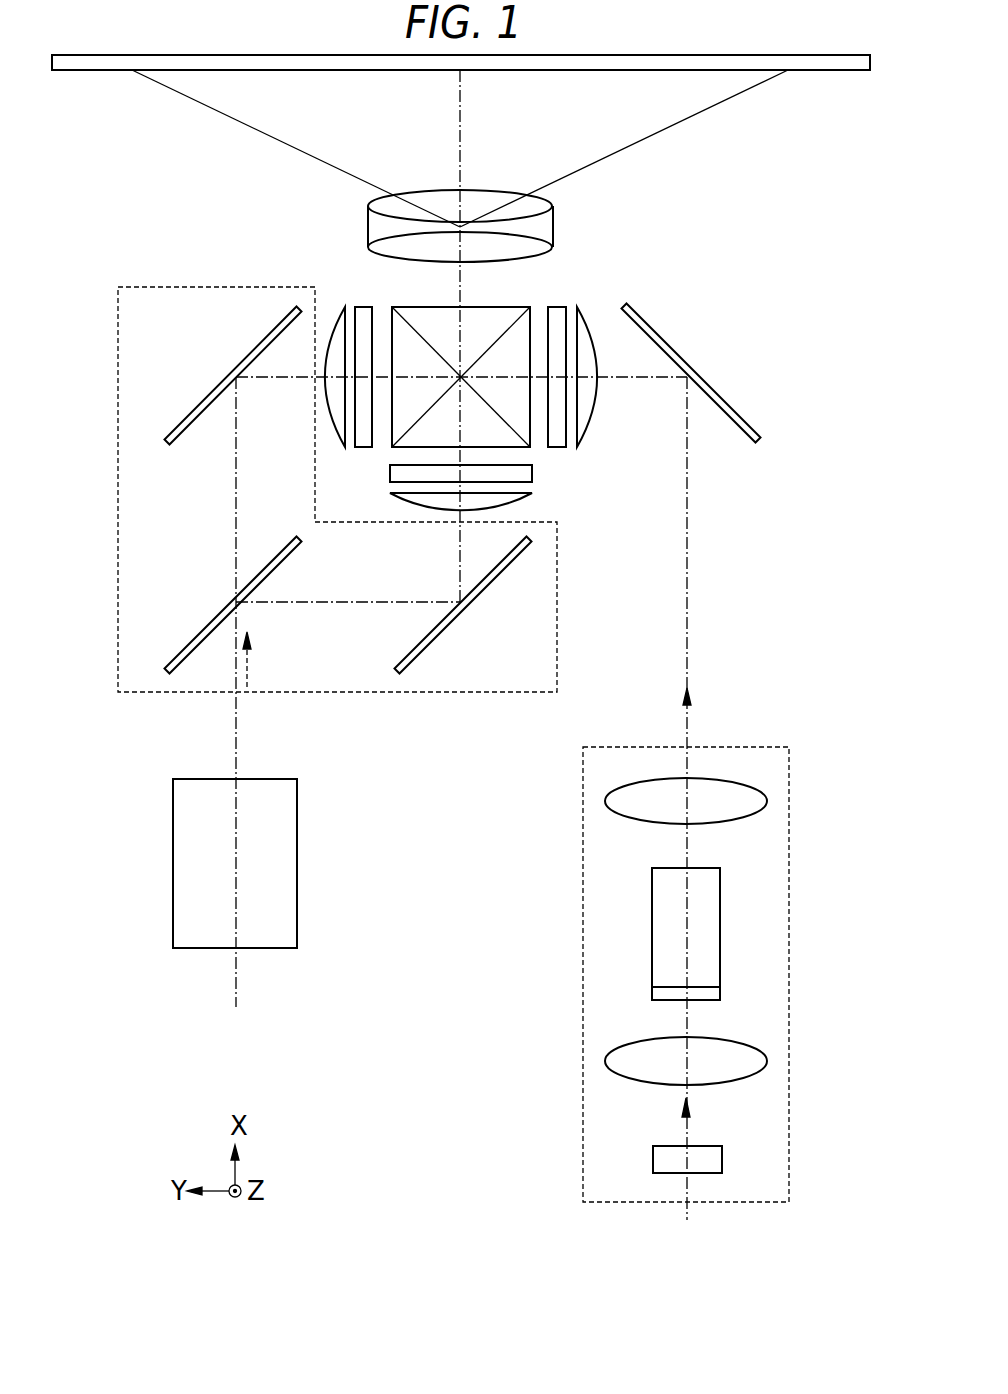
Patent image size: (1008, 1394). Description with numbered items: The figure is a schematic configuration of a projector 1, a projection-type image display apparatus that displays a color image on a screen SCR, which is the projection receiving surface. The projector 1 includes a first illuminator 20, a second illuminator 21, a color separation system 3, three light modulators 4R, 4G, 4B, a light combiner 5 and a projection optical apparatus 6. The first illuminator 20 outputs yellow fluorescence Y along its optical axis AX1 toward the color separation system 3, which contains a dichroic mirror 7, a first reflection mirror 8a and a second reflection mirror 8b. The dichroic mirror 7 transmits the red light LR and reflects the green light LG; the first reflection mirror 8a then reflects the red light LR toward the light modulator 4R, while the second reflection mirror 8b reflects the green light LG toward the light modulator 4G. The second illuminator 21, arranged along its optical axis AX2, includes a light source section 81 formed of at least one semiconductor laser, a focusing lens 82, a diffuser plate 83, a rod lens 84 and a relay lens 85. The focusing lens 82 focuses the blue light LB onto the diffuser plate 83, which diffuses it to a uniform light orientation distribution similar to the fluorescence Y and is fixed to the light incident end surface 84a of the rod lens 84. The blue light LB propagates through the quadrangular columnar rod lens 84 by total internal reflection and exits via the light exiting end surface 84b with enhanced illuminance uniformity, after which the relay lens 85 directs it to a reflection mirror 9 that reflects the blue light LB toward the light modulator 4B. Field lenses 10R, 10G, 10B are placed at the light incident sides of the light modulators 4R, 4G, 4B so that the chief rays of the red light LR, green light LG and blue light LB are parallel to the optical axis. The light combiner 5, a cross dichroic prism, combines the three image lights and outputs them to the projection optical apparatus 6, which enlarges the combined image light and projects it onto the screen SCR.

The projector 1 is at (806, 262).
The screen SCR is at (835, 72).
The projection optical apparatus 6 is at (440, 202).
The light combiner 5 is at (483, 317).
The light modulator 4R is at (363, 305).
The light modulator 4G is at (397, 475).
The light modulator 4B is at (556, 305).
The field lens 10R is at (342, 305).
The field lens 10G is at (395, 500).
The field lens 10B is at (582, 305).
The color separation system 3 is at (118, 432).
The first reflection mirror 8a is at (207, 390).
The second reflection mirror 8b is at (438, 636).
The dichroic mirror 7 is at (197, 635).
The reflection mirror 9 is at (715, 395).
The first illuminator 20 is at (297, 794).
The second illuminator 21 is at (583, 788).
The light source section 81 is at (707, 1165).
The focusing lens 82 is at (753, 1060).
The diffuser plate 83 is at (708, 993).
The rod lens 84 is at (707, 927).
The light incident end surface 84a is at (670, 990).
The light exiting end surface 84b is at (673, 865).
The relay lens 85 is at (755, 800).
The red light LR is at (236, 510).
The green light LG is at (460, 557).
The blue light LB is at (703, 538).
The optical axis AX1 is at (235, 975).
The optical axis AX2 is at (688, 1212).
The fluorescence Y is at (253, 667).